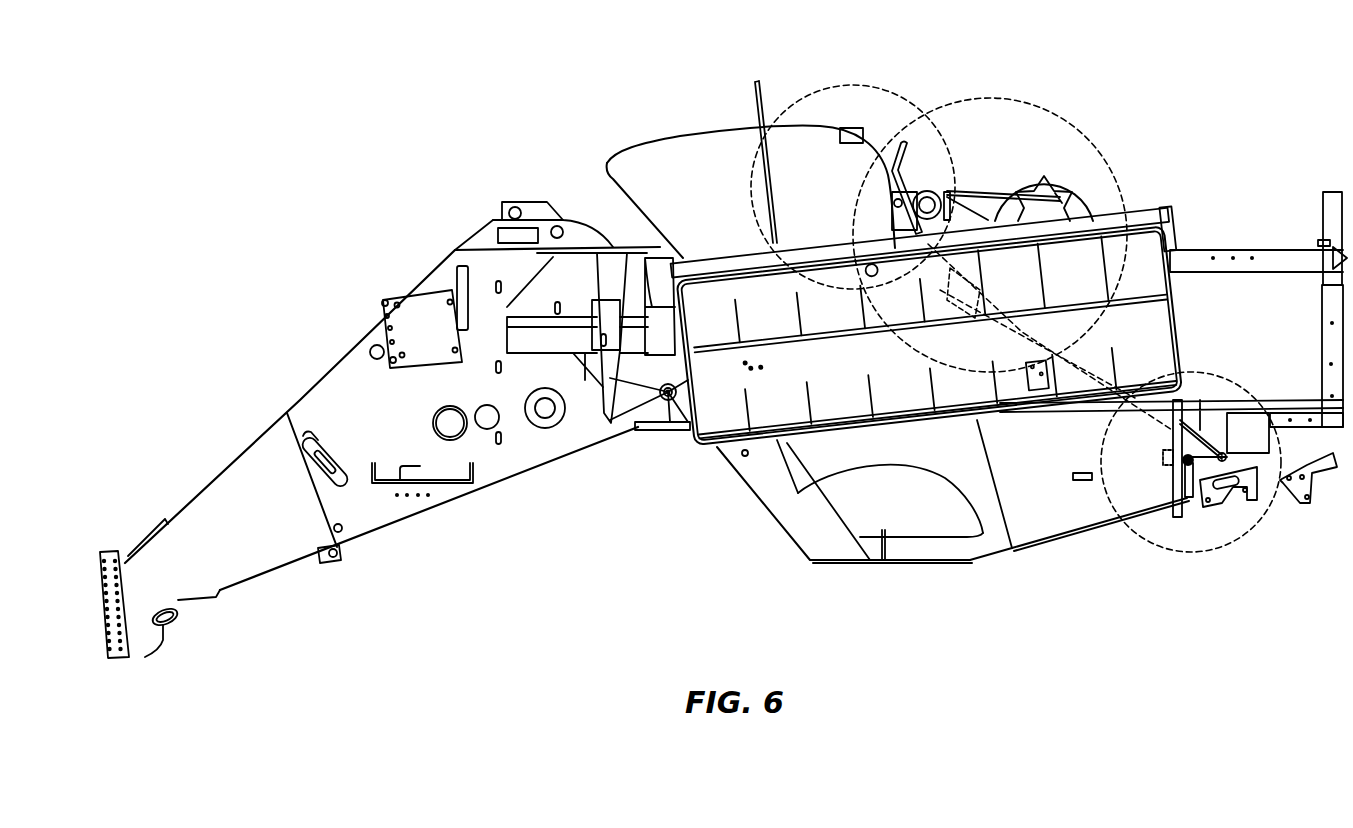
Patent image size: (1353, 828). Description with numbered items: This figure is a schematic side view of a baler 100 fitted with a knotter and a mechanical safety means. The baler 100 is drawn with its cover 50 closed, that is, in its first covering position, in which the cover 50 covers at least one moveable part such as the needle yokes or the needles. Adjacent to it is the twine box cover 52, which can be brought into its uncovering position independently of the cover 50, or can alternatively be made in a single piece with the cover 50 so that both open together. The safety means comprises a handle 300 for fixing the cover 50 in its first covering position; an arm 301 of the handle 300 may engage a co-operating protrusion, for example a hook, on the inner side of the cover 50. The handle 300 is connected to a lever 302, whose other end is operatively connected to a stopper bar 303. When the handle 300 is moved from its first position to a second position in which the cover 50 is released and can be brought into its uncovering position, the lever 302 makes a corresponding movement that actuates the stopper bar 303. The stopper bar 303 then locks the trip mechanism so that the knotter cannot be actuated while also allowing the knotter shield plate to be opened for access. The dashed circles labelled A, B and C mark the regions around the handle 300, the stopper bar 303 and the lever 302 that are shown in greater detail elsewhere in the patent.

The baler 100 is at (990, 57).
The cover 50 is at (1040, 533).
The twine box cover 52 is at (683, 443).
The handle 300 is at (1170, 532).
The arm 301 is at (1165, 460).
The lever 302 is at (1085, 367).
The stopper bar 303 is at (903, 155).
The detail region A is at (1238, 543).
The detail region B is at (1050, 113).
The detail region C is at (828, 85).